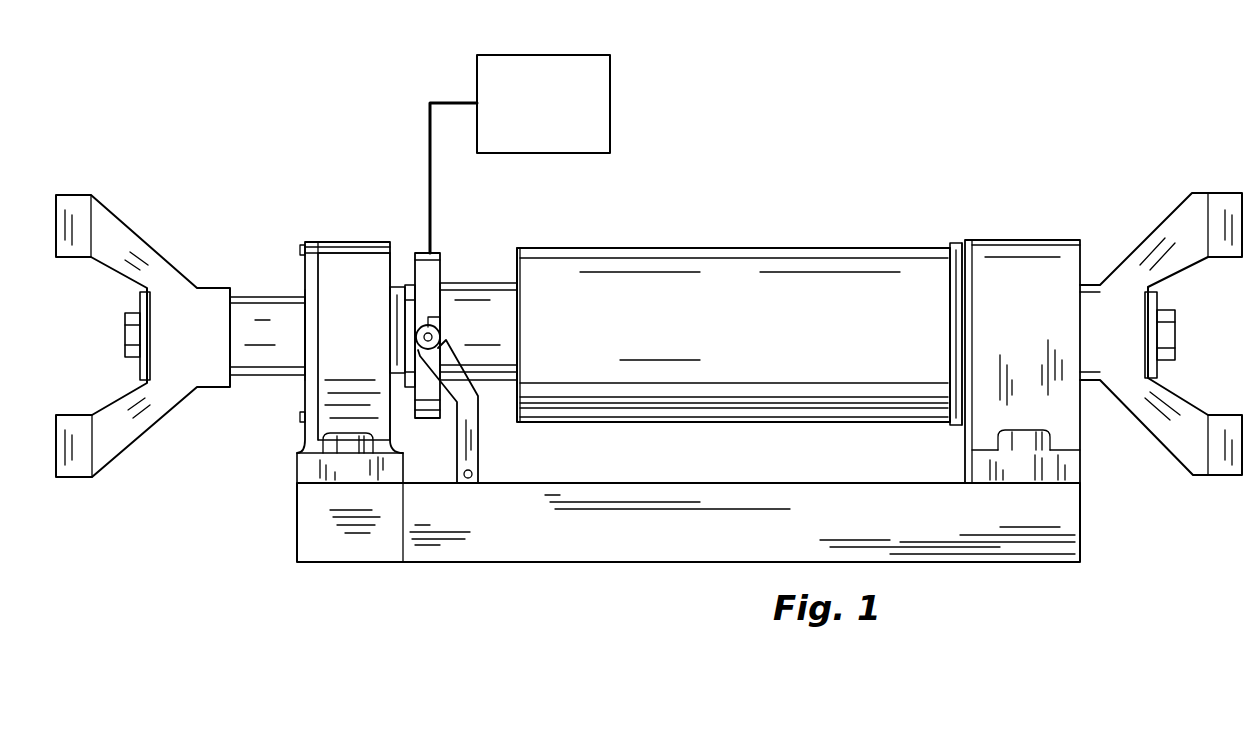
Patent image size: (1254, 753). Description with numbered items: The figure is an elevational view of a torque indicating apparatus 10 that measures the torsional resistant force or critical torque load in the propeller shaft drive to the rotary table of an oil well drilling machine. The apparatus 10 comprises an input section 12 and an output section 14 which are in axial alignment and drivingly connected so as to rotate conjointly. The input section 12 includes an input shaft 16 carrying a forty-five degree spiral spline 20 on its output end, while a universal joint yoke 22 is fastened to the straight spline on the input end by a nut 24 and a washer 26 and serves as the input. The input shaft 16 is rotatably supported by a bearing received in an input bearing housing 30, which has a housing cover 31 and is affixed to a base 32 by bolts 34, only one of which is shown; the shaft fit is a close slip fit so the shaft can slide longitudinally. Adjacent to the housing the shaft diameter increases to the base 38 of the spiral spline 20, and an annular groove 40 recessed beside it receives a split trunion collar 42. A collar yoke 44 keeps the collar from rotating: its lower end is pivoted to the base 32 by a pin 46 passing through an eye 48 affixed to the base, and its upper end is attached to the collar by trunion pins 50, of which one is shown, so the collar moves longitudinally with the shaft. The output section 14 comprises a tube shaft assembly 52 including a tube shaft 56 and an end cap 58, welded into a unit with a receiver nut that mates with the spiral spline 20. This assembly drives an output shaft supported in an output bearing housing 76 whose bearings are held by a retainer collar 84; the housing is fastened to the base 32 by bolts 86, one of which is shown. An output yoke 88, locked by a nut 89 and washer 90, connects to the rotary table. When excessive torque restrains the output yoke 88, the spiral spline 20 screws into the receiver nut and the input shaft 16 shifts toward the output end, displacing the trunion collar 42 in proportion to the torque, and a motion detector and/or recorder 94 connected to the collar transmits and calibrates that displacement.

The torque indicating apparatus 10 is at (370, 130).
The input section 12 is at (392, 287).
The output section 14 is at (877, 288).
The input shaft 16 is at (277, 360).
The spiral spline 20 is at (503, 300).
The universal joint yoke 22 is at (128, 242).
The nut 24 is at (125, 332).
The washer 26 is at (147, 363).
The input bearing housing 30 is at (310, 282).
The housing cover 31 is at (307, 282).
The base 32 is at (317, 528).
The bolts 34 is at (352, 447).
The base of the spiral spline 38 is at (408, 285).
The annular groove 40 is at (417, 398).
The split trunion collar 42 is at (433, 258).
The collar yoke 44 is at (473, 420).
The pin 46 is at (473, 475).
The eye 48 is at (460, 480).
The trunion pins 50 is at (433, 335).
The tube shaft assembly 52 is at (583, 303).
The tube shaft 56 is at (673, 248).
The end cap 58 is at (954, 243).
The output bearing housing 76 is at (1043, 263).
The retainer collar 84 is at (968, 430).
The bolts 86 is at (1033, 438).
The output yoke 88 is at (1177, 222).
The nut 89 is at (1167, 333).
The washer 90 is at (1158, 368).
The motion detector and/or recorder 94 is at (610, 95).